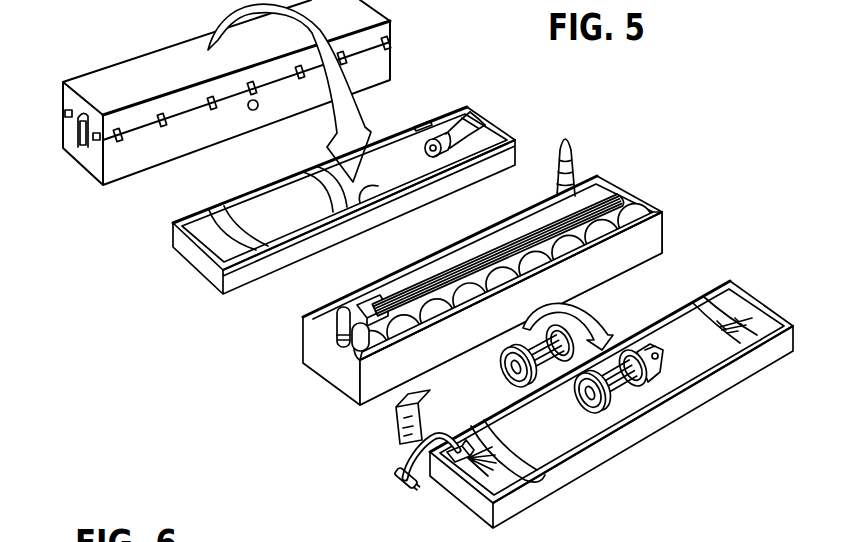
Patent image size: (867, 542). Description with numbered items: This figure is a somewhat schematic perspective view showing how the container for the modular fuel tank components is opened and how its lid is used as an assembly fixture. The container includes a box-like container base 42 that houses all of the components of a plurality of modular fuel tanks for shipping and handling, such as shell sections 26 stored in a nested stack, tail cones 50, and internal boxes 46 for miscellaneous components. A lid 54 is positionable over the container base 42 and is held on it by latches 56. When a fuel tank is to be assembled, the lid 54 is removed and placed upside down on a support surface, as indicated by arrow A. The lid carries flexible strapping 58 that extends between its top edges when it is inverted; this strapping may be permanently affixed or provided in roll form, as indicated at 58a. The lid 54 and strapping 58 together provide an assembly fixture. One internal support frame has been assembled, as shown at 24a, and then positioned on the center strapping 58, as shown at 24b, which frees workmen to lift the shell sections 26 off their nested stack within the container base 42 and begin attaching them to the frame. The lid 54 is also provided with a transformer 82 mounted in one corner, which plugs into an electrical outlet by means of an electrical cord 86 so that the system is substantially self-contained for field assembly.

The assembled internal support frame 24a is at (494, 377).
The internal support frame positioned on strapping 24b is at (590, 422).
The shell sections 26 is at (462, 265).
The container base 42 is at (150, 150).
The internal boxes 46 is at (395, 428).
The tail cones 50 is at (576, 150).
The lid 54 is at (173, 60).
The latches 56 is at (389, 58).
The flexible strapping 58 is at (232, 228).
The strapping in roll form 58a is at (477, 124).
The transformer 82 is at (447, 466).
The electrical cord 86 is at (410, 490).
The arrow A is at (341, 123).